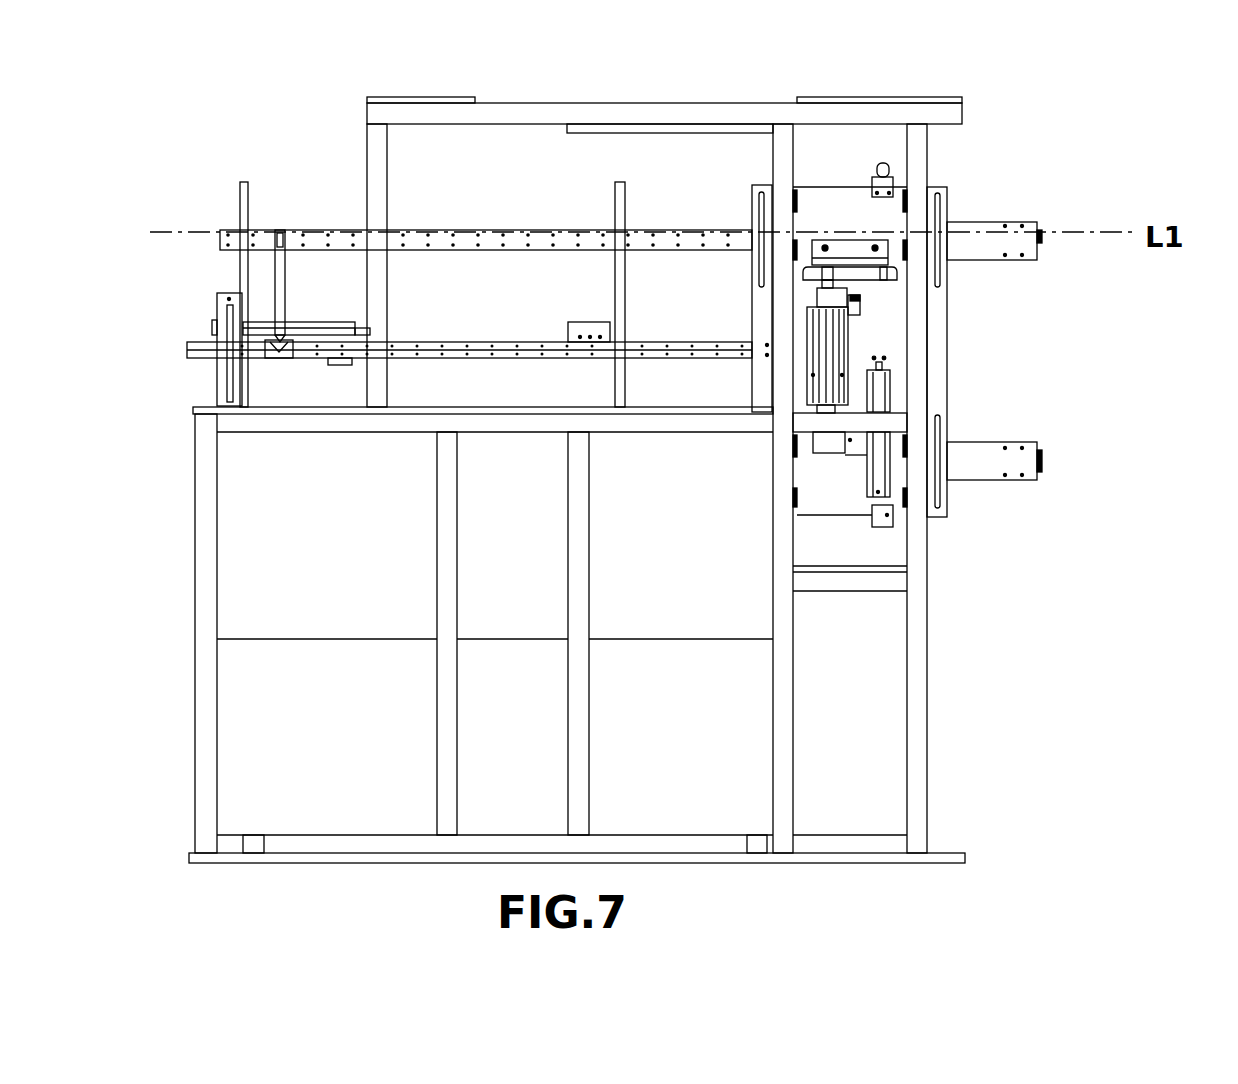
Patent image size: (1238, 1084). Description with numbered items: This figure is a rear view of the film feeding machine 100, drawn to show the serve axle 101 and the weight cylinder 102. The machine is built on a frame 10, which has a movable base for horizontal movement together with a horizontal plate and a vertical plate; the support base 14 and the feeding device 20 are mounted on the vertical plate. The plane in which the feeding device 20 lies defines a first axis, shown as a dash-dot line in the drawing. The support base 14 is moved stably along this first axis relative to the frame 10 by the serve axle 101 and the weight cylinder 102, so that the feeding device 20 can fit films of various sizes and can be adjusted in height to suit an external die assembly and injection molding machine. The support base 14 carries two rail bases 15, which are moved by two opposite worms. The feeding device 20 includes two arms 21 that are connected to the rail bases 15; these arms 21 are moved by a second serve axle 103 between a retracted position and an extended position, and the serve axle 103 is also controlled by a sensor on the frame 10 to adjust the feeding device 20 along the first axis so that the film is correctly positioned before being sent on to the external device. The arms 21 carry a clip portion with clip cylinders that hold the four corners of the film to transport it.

The film feeding machine 100 is at (972, 683).
The frame 10 is at (933, 157).
The support base 14 is at (953, 424).
The rail bases 15 is at (997, 227).
The feeding device 20 is at (1045, 246).
The arms 21 is at (312, 230).
The serve axle 101 is at (843, 340).
The weight cylinder 102 is at (878, 402).
The serve axle 103 is at (345, 335).